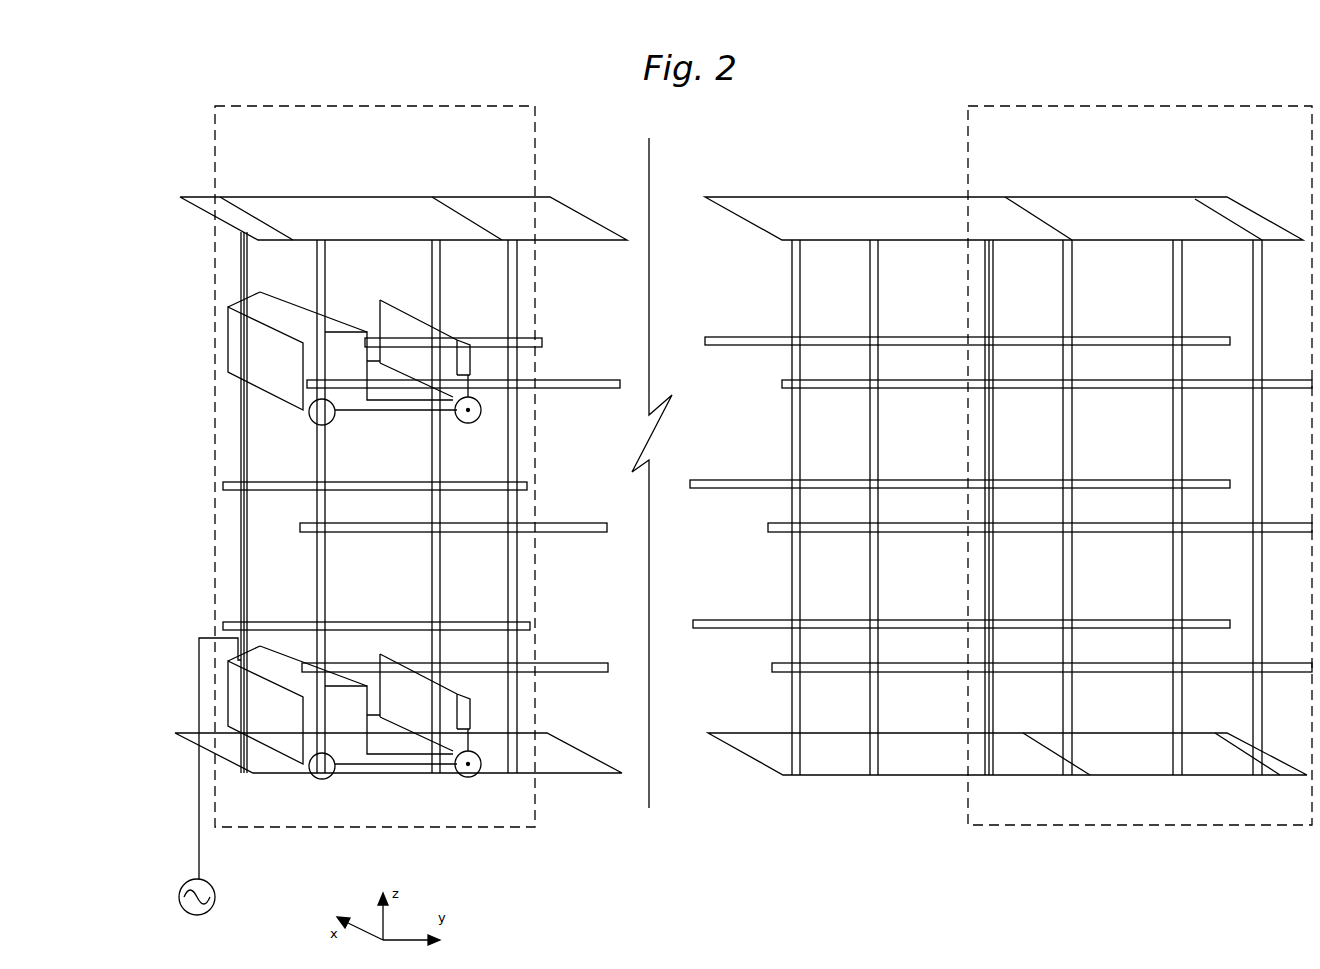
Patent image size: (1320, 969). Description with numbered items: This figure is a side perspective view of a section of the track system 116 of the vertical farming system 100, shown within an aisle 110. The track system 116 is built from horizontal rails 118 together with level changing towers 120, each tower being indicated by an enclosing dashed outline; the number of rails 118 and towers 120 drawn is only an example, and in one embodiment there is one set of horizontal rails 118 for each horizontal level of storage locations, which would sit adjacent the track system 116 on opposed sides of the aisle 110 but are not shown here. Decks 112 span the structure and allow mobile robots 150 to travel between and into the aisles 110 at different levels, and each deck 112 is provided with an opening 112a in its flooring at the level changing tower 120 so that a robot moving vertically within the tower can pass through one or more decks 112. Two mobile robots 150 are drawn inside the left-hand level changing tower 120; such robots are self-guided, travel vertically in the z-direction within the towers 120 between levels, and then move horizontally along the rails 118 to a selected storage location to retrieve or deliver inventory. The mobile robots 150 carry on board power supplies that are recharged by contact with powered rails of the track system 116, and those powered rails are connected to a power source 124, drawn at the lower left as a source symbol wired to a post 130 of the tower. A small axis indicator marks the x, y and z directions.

The vertical farming system 100 is at (248, 82).
The aisle 110 is at (997, 507).
The deck 112 is at (893, 227).
The opening 112a is at (402, 228).
The track system 116 is at (736, 286).
The horizontal rail 118 is at (766, 482).
The level changing tower 120 is at (386, 105).
The power source 124 is at (215, 882).
The conductive post 130 is at (240, 423).
The mobile robot 150 is at (242, 343).